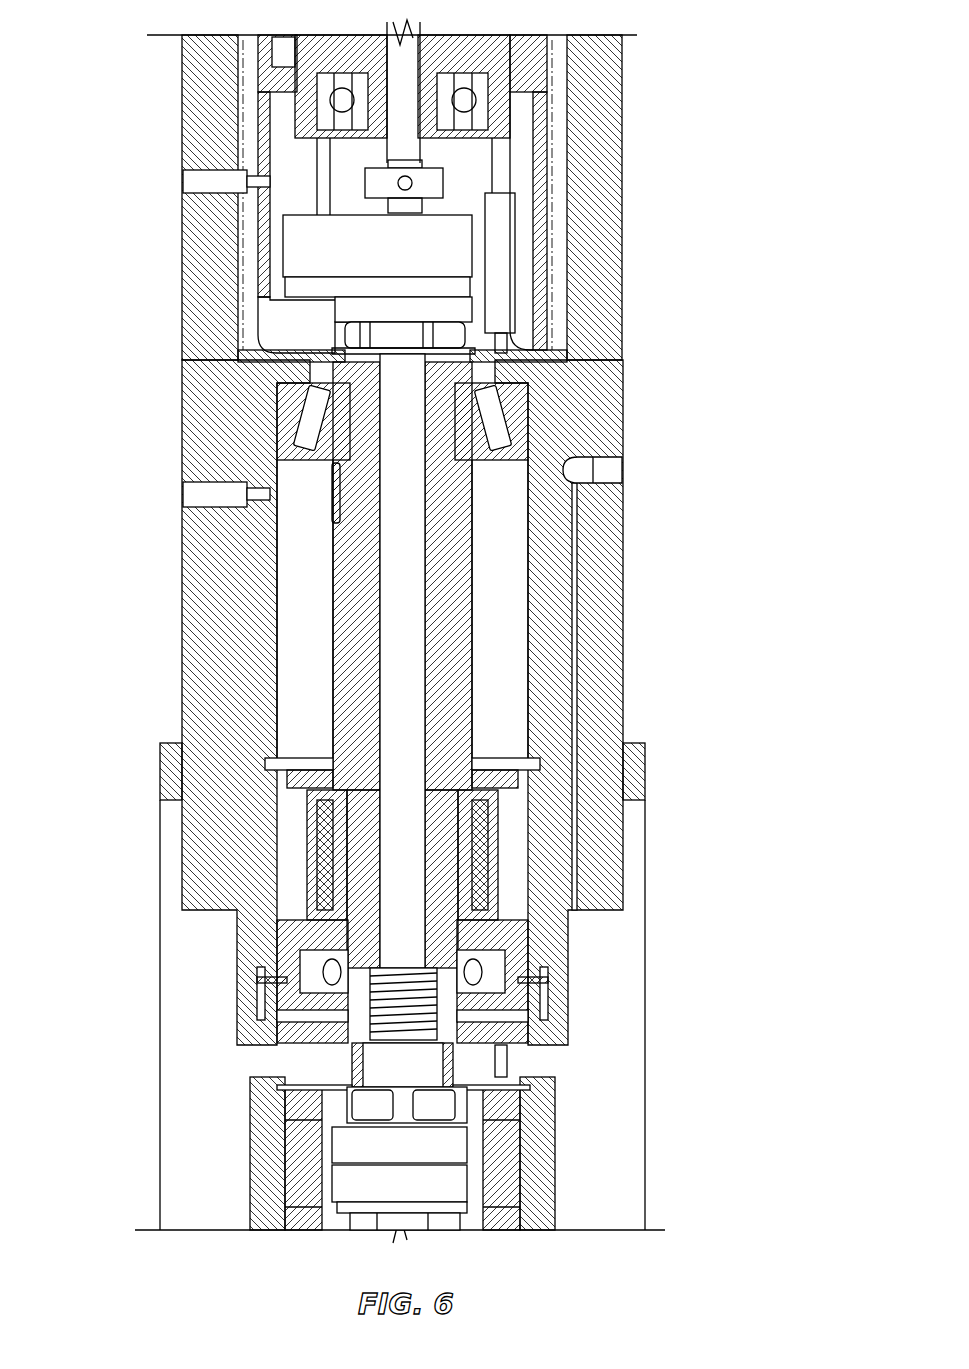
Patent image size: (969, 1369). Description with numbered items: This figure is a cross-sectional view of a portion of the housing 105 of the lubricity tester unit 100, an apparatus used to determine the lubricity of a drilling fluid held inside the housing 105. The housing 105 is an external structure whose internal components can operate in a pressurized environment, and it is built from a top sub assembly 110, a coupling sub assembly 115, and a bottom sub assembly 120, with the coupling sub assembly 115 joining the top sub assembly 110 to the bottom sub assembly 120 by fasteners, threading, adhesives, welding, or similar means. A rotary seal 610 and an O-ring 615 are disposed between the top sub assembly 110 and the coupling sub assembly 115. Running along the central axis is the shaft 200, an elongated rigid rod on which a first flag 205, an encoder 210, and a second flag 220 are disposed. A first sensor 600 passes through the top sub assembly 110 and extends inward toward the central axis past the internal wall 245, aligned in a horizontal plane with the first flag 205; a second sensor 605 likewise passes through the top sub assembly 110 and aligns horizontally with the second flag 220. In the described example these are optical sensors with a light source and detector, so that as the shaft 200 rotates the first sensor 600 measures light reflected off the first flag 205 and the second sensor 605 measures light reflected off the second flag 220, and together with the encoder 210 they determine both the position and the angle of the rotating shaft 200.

The lubricity tester unit 100 is at (673, 466).
The housing 105 is at (155, 768).
The top sub assembly 110 is at (600, 772).
The coupling sub assembly 115 is at (160, 1002).
The bottom sub assembly 120 is at (538, 1140).
The shaft 200 is at (415, 585).
The first flag 205 is at (431, 182).
The encoder 210 is at (467, 255).
The second flag 220 is at (323, 507).
The internal wall 245 is at (242, 277).
The first sensor 600 is at (185, 182).
The second sensor 605 is at (185, 493).
The rotary seal 610 is at (500, 963).
The O-ring 615 is at (482, 970).